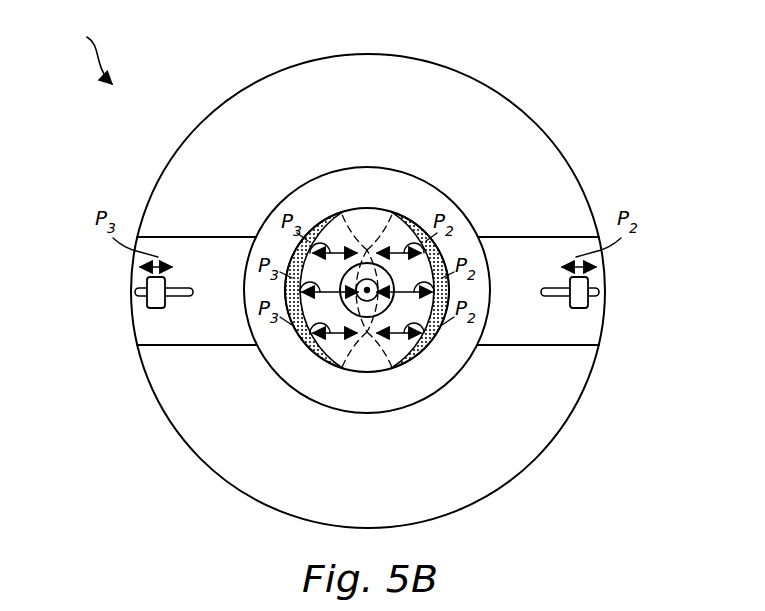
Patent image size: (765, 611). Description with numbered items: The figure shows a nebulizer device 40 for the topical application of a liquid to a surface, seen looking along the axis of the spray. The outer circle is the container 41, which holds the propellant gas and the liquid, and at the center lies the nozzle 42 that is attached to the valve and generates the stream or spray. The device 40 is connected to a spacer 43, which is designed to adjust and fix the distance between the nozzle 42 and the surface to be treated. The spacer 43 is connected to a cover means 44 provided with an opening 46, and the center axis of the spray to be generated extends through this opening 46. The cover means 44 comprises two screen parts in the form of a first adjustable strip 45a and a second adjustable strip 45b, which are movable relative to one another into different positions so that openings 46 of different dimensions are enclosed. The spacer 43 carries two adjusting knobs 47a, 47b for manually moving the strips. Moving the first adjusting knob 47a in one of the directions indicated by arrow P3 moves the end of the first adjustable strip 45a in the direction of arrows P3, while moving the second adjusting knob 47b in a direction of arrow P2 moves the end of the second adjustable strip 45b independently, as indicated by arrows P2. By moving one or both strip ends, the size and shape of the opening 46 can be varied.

The nebulizer device 40 is at (84, 38).
The container 41 is at (502, 142).
The nozzle 42 is at (363, 270).
The spacer 43 is at (187, 335).
The cover means 44 is at (367, 392).
The first adjustable strip 45a is at (310, 342).
The second adjustable strip 45b is at (426, 342).
The opening 46 is at (368, 227).
The first adjusting knob 47a is at (152, 301).
The second adjusting knob 47b is at (583, 301).